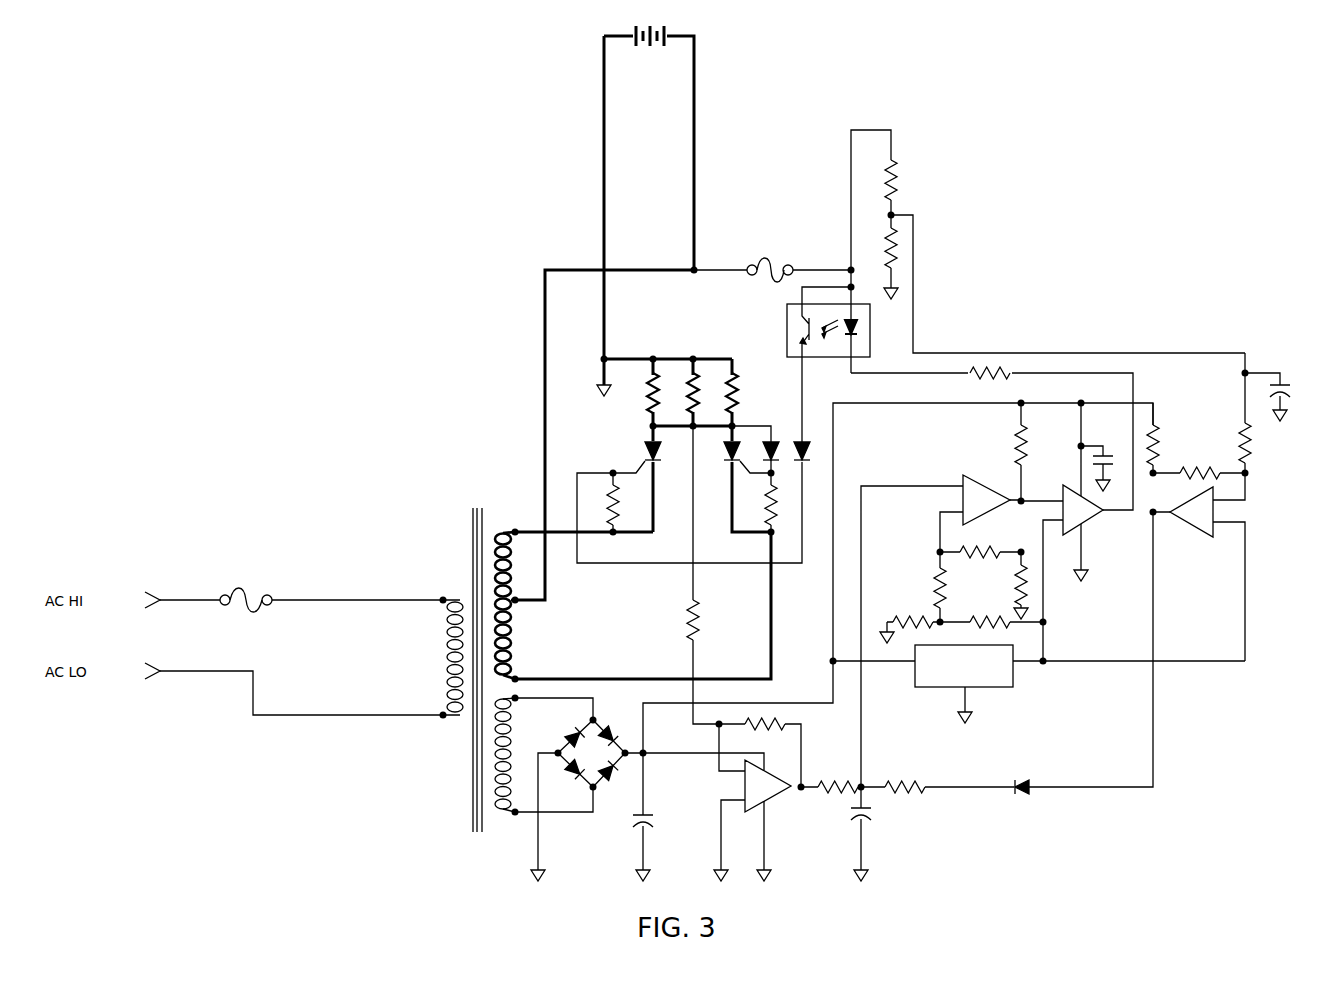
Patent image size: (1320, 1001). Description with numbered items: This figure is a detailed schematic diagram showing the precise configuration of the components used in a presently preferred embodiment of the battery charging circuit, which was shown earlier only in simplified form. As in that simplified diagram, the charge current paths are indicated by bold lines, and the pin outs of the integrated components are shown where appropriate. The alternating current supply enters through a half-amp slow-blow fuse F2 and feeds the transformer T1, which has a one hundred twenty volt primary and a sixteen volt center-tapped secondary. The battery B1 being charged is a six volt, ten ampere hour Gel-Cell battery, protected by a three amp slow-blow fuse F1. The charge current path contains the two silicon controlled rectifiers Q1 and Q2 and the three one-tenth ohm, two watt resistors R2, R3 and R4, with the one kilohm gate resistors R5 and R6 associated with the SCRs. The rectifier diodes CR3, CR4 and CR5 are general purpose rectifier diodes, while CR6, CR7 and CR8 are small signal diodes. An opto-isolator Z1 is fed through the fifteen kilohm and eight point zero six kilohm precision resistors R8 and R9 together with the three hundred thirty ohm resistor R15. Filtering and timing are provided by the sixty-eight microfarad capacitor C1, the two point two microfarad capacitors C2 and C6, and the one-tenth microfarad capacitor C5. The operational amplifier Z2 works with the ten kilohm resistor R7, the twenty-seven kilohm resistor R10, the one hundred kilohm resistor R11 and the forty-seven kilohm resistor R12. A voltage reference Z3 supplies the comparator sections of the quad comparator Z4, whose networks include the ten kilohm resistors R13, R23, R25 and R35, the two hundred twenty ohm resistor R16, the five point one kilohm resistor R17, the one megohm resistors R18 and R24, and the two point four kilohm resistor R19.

The battery B1 is at (650, 46).
The fuse F1 is at (772, 260).
The fuse F2 is at (246, 590).
The transformer T1 is at (479, 681).
The resistor R2 is at (662, 393).
The resistor R3 is at (702, 393).
The resistor R4 is at (741, 393).
The resistor R5 is at (622, 503).
The resistor R6 is at (781, 503).
The resistor R7 is at (703, 575).
The resistor R8 is at (874, 200).
The resistor R9 is at (877, 257).
The resistor R10 is at (760, 744).
The resistor R11 is at (831, 778).
The resistor R12 is at (937, 778).
The resistor R13 is at (1035, 452).
The resistor R15 is at (992, 438).
The resistor R16 is at (910, 621).
The resistor R17 is at (955, 587).
The resistor R18 is at (981, 545).
The resistor R19 is at (991, 613).
The resistor R23 is at (1167, 438).
The resistor R24 is at (1199, 464).
The resistor R25 is at (1260, 423).
The resistor R35 is at (1028, 586).
The SCR Q1 is at (637, 450).
The SCR Q2 is at (747, 450).
The opto-isolator Z1 is at (828, 323).
The operational amplifier Z2 is at (754, 802).
The voltage reference Z3 is at (1039, 684).
The quad comparator Z4 is at (1053, 630).
The capacitor C1 is at (651, 817).
The capacitor C2 is at (870, 834).
The capacitor C5 is at (1102, 449).
The capacitor C6 is at (1273, 387).
The diode CR3 is at (611, 732).
The diode CR4 is at (612, 776).
The diode CR5 is at (563, 755).
The diode CR6 is at (782, 447).
The diode CR7 is at (812, 452).
The diode CR8 is at (1080, 653).